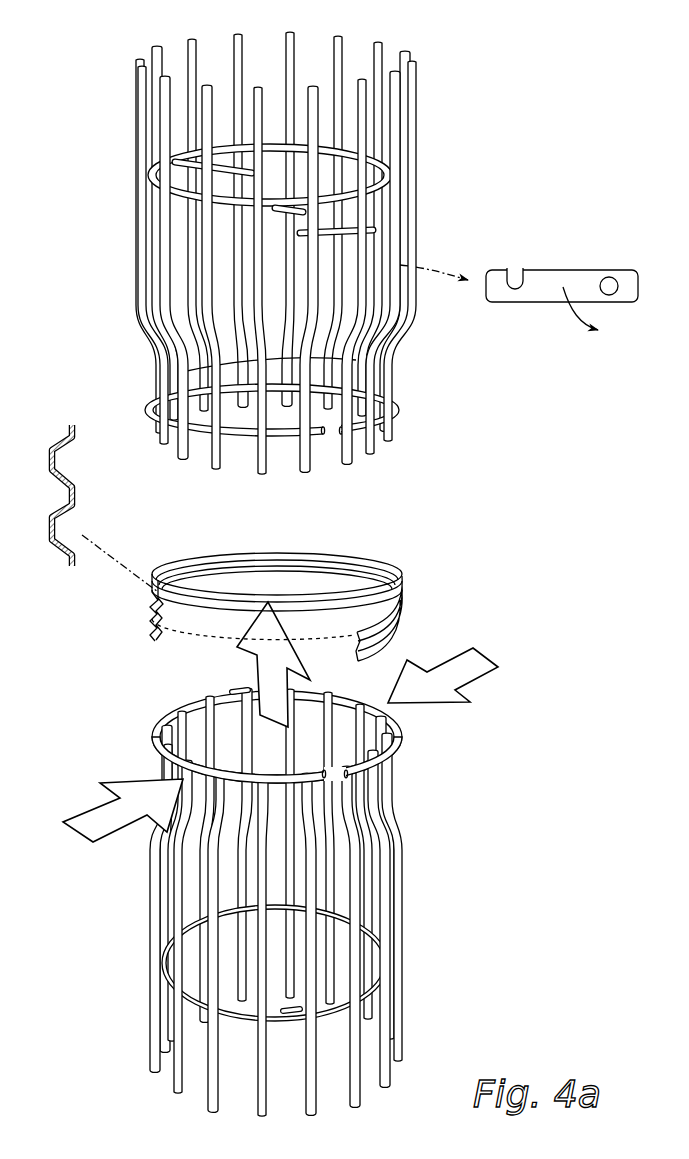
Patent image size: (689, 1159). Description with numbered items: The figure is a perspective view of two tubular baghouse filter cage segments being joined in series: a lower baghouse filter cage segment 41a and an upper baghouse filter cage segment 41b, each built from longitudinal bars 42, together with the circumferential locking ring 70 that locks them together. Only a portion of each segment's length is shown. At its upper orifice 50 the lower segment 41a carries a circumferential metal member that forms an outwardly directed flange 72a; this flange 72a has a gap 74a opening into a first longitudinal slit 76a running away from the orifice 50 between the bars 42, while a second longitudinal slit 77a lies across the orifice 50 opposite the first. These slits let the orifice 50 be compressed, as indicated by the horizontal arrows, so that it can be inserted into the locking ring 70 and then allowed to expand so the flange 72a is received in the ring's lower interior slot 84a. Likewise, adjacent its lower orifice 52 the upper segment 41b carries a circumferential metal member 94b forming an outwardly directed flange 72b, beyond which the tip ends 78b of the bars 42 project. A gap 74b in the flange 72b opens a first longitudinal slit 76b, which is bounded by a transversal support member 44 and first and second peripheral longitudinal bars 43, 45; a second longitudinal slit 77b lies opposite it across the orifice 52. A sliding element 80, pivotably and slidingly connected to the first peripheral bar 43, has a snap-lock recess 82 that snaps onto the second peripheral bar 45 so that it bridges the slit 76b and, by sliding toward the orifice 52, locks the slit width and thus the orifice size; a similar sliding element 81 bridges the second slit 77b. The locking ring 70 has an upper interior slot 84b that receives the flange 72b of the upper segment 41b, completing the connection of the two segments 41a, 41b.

The lower tubular baghouse filter cage segment 41a is at (350, 859).
The upper tubular baghouse filter cage segment 41b is at (379, 273).
The longitudinal bars 42 is at (339, 568).
The first peripheral longitudinal bar 43 is at (360, 333).
The transversal support member 44 is at (333, 203).
The second peripheral longitudinal bar 45 is at (315, 284).
The upper orifice 50 is at (374, 681).
The lower orifice 52 is at (194, 481).
The circumferential locking ring 70 is at (430, 603).
The outwardly directed flange 72a is at (402, 742).
The outwardly directed flange 72b is at (394, 403).
The gap 74a is at (325, 795).
The gap 74b is at (343, 423).
The first longitudinal slit 76a is at (323, 968).
The first longitudinal slit 76b is at (332, 438).
The second longitudinal slit 77a is at (222, 687).
The second longitudinal slit 77b is at (228, 368).
The tip ends of the longitudinal bars 78b is at (307, 478).
The sliding element 80 is at (469, 277).
The sliding element 81 is at (228, 158).
The snap-lock recess 82 is at (519, 297).
The lower interior slot 84a is at (78, 528).
The upper interior slot 84b is at (76, 462).
The circumferential metal member 94b is at (340, 456).